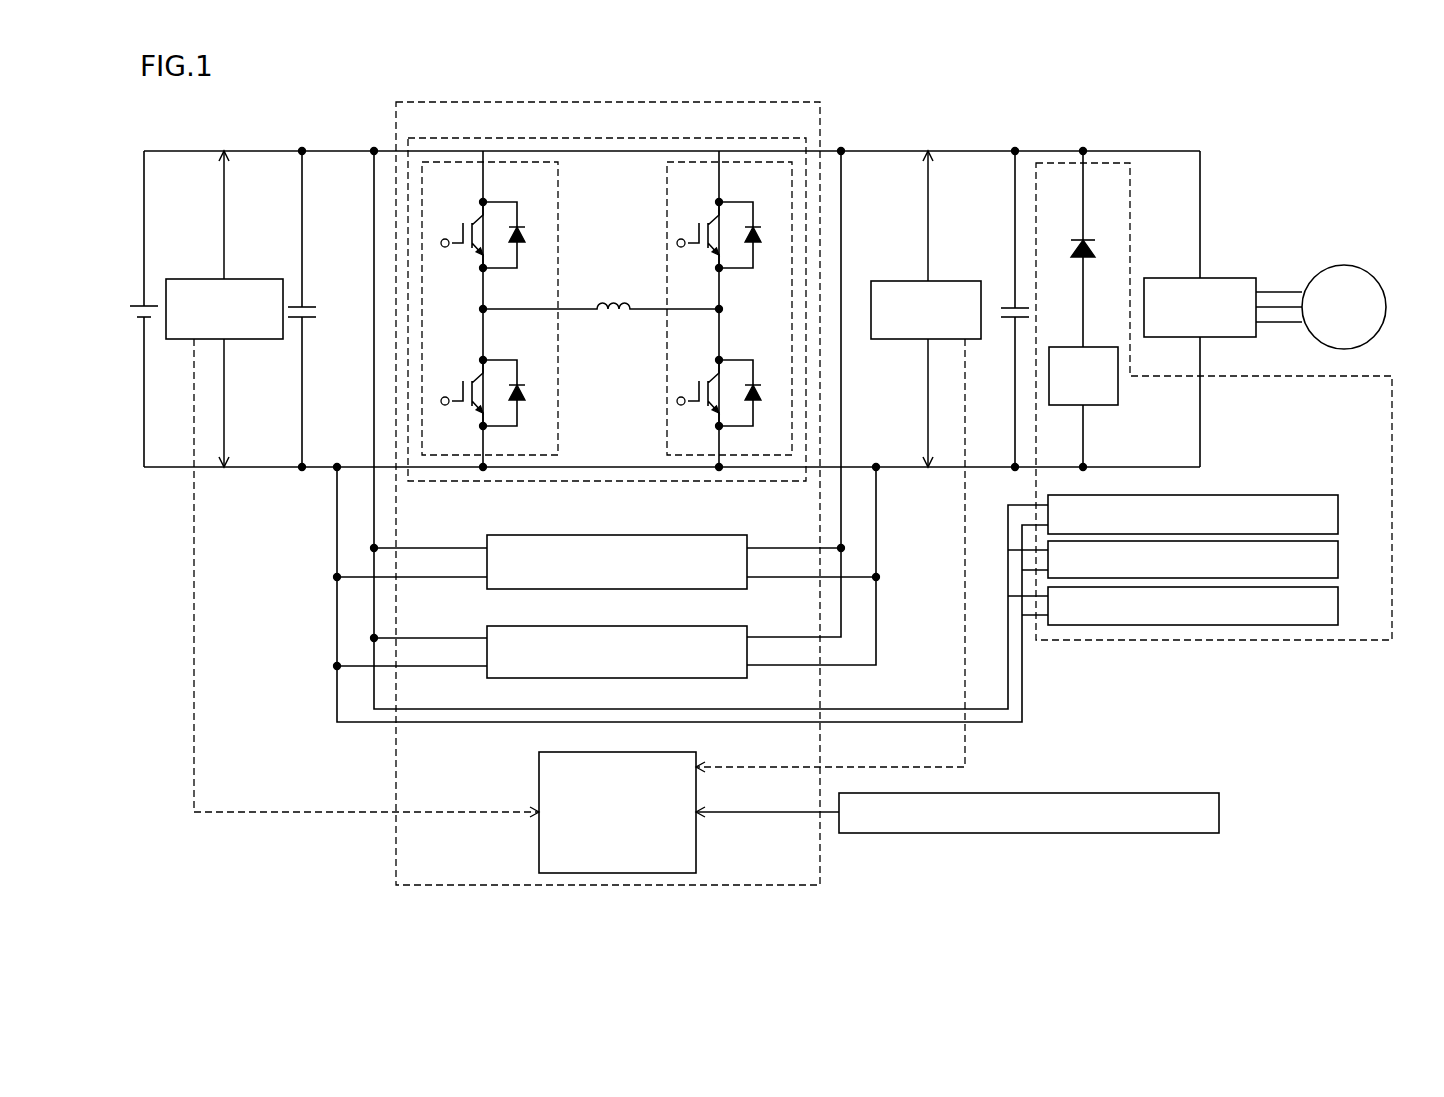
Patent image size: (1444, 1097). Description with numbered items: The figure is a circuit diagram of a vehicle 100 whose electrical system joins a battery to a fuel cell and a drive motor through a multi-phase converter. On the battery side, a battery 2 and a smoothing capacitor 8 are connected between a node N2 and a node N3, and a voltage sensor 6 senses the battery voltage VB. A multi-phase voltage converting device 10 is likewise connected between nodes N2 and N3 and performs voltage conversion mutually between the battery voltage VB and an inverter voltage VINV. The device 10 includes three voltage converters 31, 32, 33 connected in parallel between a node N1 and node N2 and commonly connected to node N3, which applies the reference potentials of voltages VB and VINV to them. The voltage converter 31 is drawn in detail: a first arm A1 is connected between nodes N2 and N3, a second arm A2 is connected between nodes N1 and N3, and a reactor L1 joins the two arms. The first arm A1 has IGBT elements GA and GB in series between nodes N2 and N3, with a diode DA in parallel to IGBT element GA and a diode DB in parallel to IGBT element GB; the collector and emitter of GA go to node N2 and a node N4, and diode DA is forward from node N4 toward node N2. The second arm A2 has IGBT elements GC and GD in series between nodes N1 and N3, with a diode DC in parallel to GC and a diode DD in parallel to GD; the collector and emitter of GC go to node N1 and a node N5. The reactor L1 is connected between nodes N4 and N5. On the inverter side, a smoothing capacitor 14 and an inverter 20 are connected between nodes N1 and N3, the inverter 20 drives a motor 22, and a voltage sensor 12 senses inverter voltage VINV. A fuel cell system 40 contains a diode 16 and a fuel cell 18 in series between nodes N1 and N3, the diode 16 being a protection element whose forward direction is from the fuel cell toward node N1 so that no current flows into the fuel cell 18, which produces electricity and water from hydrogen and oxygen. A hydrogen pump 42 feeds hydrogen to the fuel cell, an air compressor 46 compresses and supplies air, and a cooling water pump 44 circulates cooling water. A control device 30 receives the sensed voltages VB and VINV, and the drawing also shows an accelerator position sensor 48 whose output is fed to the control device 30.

The vehicle 100 is at (146, 121).
The battery 2 is at (132, 305).
The voltage sensor 6 is at (218, 279).
The smoothing capacitor 8 is at (318, 306).
The multi-phase voltage converting device 10 is at (722, 102).
The voltage converter 31 is at (708, 138).
The voltage sensor 12 is at (966, 280).
The smoothing capacitor 14 is at (1005, 304).
The diode 16 is at (1079, 238).
The fuel cell 18 is at (1116, 405).
The inverter 20 is at (1237, 278).
The motor 22 is at (1339, 265).
The control device 30 is at (711, 742).
The voltage converter 32 is at (748, 535).
The voltage converter 33 is at (748, 626).
The fuel cell system 40 is at (1392, 457).
The hydrogen pump 42 is at (1338, 516).
The cooling water pump 44 is at (1338, 561).
The air compressor 46 is at (1338, 607).
The accelerator position sensor 48 is at (1219, 814).
The node N1 is at (840, 148).
The node N2 is at (374, 148).
The node N3 is at (334, 470).
The node N4 is at (481, 309).
The node N5 is at (722, 309).
The first arm A1 is at (558, 198).
The second arm A2 is at (667, 367).
The IGBT element GA is at (471, 221).
The IGBT element GB is at (471, 383).
The IGBT element GC is at (707, 221).
The IGBT element GD is at (707, 383).
The diode DA is at (525, 239).
The diode DB is at (525, 400).
The diode DC is at (761, 239).
The diode DD is at (761, 400).
The reactor L1 is at (612, 300).
The battery voltage VB is at (366, 589).
The inverter voltage VINV is at (830, 568).